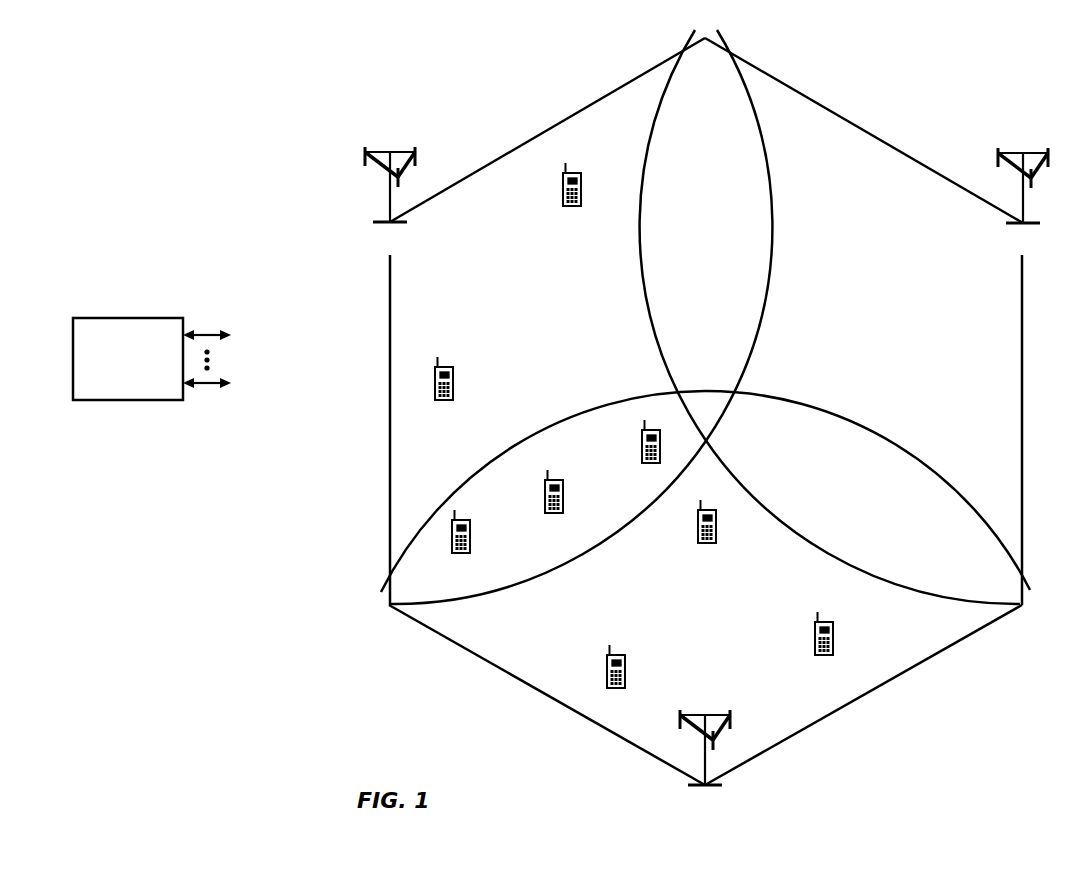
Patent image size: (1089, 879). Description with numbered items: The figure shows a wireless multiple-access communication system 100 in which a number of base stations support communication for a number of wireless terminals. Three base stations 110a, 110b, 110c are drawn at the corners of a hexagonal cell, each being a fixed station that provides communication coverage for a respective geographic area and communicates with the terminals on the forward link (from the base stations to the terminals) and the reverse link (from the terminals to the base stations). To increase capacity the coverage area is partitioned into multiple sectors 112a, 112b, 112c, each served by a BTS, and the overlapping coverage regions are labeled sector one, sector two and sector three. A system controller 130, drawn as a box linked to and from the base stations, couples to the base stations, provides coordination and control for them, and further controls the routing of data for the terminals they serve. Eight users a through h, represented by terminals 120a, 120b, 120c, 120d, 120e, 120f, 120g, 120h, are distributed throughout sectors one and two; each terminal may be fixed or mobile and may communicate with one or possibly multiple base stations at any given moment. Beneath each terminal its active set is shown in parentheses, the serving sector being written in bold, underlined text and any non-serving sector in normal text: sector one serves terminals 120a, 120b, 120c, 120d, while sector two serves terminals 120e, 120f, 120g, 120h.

The wireless multiple-access communication system 100 is at (195, 71).
The base station 110a is at (397, 142).
The base station 110b is at (700, 719).
The base station 110c is at (1018, 153).
The sector 112a is at (577, 110).
The sector 112b is at (834, 713).
The sector 112c is at (835, 113).
The terminal 120a is at (455, 512).
The terminal 120b is at (662, 425).
The terminal 120c is at (576, 158).
The terminal 120d is at (449, 353).
The terminal 120e is at (559, 467).
The terminal 120f is at (620, 644).
The terminal 120g is at (712, 500).
The terminal 120h is at (829, 613).
The system controller 130 is at (124, 318).